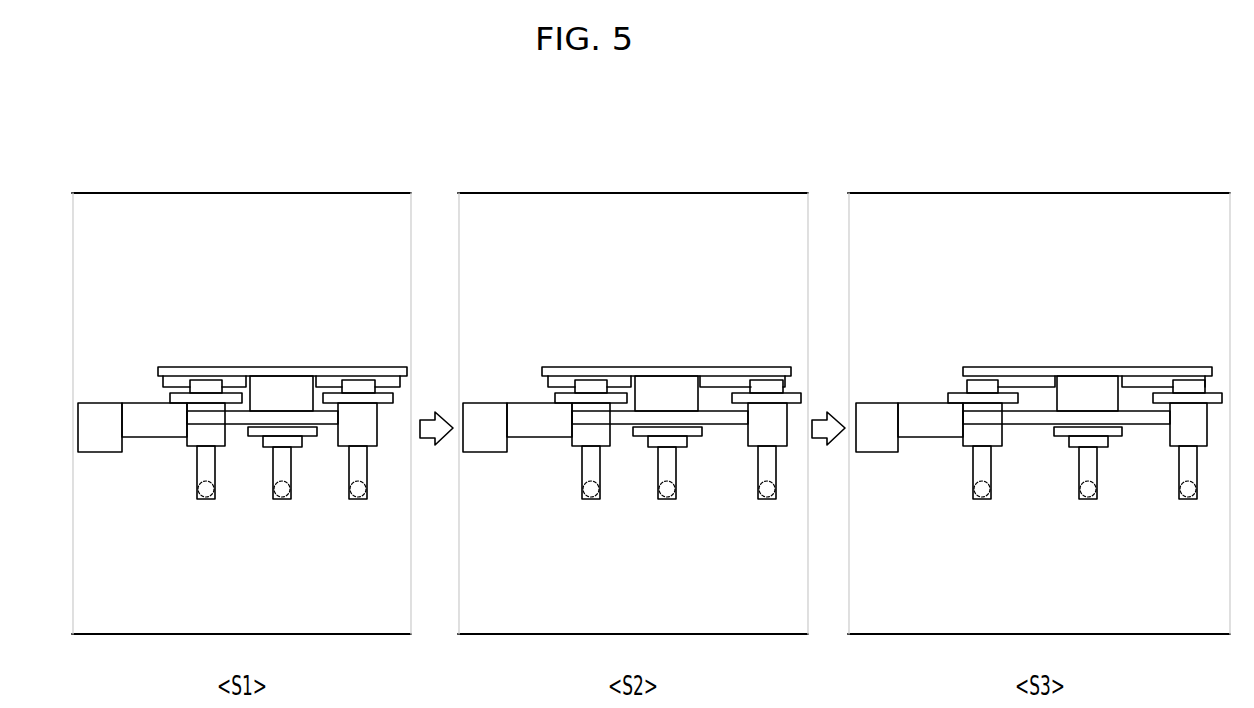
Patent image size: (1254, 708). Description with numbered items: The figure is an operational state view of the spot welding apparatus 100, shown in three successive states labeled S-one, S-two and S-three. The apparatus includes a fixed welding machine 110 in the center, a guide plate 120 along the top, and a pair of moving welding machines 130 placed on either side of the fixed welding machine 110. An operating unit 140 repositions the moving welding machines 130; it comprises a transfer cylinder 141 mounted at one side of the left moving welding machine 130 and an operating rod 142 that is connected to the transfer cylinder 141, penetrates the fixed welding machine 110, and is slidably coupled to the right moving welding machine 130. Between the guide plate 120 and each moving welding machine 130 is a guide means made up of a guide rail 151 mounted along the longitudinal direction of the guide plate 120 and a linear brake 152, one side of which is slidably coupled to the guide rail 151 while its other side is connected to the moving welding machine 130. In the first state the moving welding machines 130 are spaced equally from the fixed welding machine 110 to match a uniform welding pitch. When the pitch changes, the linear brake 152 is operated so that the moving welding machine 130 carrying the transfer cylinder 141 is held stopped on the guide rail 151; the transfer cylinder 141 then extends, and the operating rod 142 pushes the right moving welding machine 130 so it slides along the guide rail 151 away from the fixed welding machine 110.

The spot welding apparatus 100 is at (262, 239).
The fixed welding machine 110 is at (277, 508).
The guide plate 120 is at (284, 371).
The moving welding machine 130 is at (200, 508).
The operating unit 140 is at (123, 388).
The transfer cylinder 141 is at (98, 410).
The operating rod 142 is at (244, 413).
The guide rail 151 is at (170, 382).
The linear brake 152 is at (207, 388).